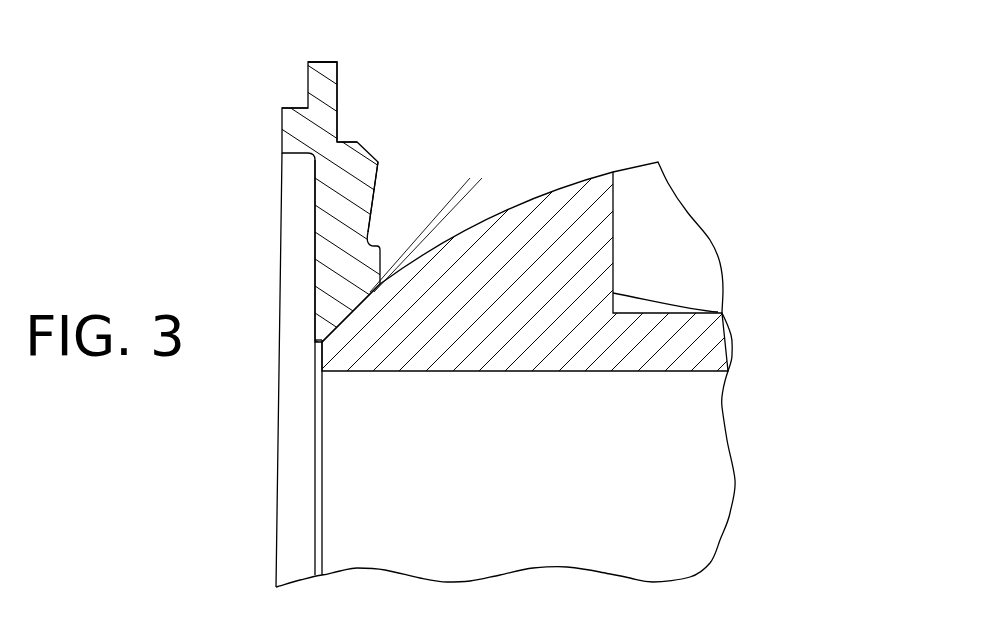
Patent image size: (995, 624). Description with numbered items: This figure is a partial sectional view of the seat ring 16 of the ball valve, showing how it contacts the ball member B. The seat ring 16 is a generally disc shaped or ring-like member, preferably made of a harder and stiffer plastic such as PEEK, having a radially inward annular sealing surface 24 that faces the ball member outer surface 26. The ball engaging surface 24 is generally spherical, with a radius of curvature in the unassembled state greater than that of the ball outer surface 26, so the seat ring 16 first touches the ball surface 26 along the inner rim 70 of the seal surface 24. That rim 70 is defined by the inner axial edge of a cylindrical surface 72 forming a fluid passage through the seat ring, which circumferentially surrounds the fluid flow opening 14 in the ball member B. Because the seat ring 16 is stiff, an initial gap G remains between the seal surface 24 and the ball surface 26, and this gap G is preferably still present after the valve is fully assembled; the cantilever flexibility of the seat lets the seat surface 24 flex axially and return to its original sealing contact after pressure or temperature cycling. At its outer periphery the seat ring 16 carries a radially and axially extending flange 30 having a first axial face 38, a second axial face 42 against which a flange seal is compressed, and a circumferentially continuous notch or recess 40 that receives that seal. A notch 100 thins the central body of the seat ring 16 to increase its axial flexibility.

The fluid flow opening 14 is at (518, 492).
The seat ring 16 is at (330, 258).
The annular sealing surface 24 is at (358, 303).
The ball member outer surface 26 is at (577, 180).
The annular outer circumferential flange 30 is at (323, 93).
The first axial face 38 is at (340, 128).
The notch or recess 40 is at (297, 92).
The second axial face 42 is at (308, 80).
The inner rim 70 is at (330, 338).
The cylindrical surface 72 is at (315, 342).
The notch 100 is at (370, 212).
The gap G is at (440, 152).
The ball member B is at (620, 205).